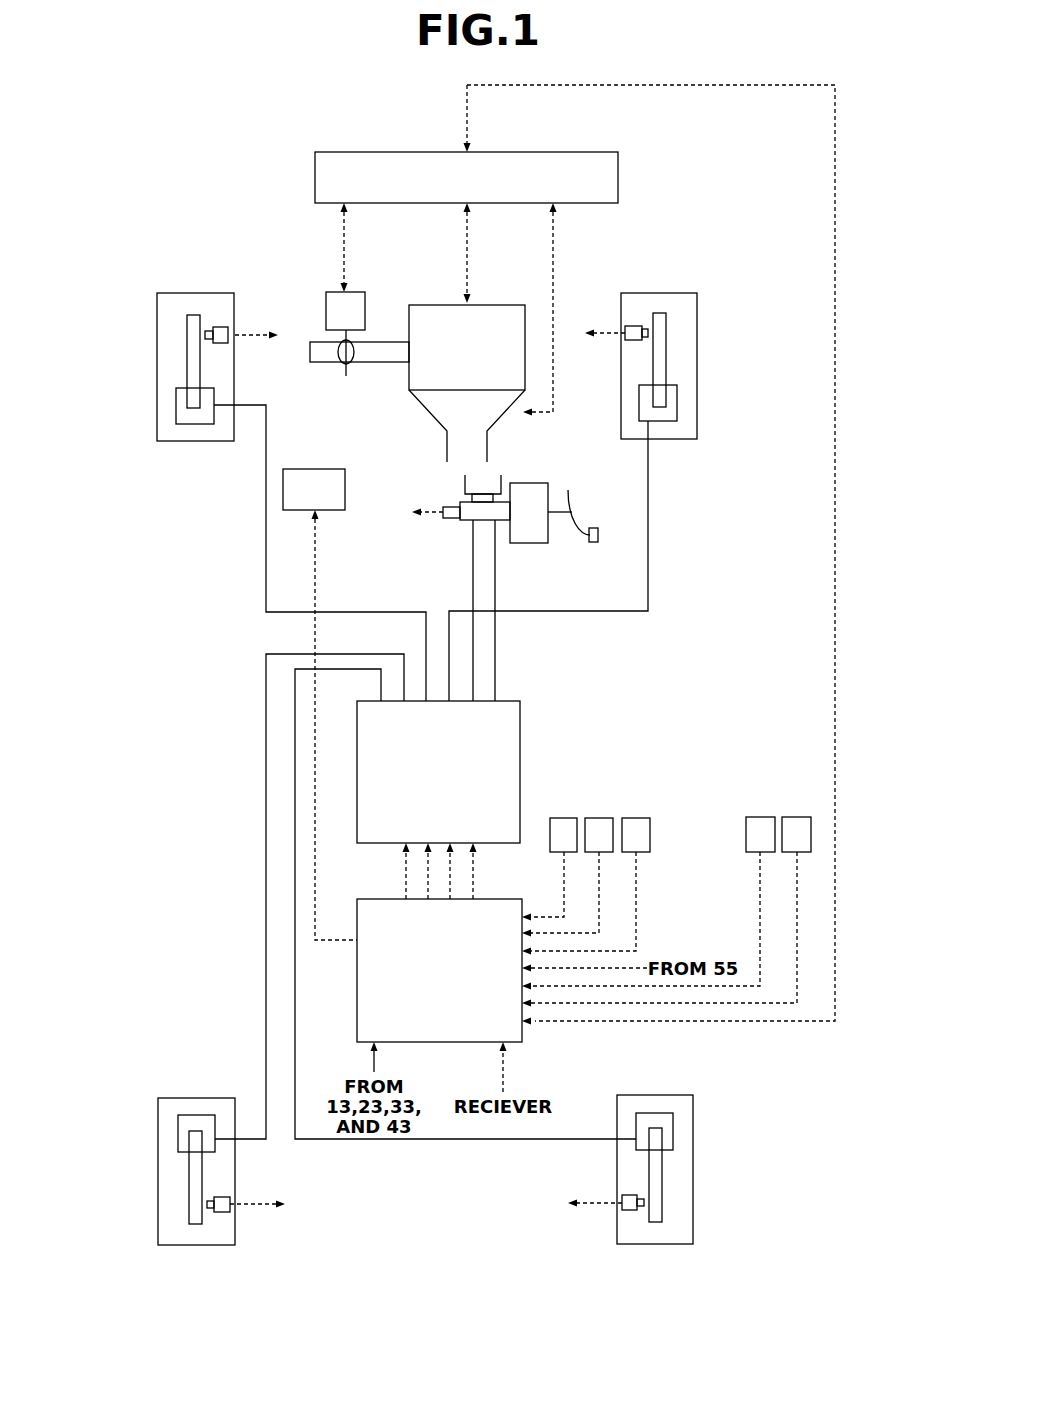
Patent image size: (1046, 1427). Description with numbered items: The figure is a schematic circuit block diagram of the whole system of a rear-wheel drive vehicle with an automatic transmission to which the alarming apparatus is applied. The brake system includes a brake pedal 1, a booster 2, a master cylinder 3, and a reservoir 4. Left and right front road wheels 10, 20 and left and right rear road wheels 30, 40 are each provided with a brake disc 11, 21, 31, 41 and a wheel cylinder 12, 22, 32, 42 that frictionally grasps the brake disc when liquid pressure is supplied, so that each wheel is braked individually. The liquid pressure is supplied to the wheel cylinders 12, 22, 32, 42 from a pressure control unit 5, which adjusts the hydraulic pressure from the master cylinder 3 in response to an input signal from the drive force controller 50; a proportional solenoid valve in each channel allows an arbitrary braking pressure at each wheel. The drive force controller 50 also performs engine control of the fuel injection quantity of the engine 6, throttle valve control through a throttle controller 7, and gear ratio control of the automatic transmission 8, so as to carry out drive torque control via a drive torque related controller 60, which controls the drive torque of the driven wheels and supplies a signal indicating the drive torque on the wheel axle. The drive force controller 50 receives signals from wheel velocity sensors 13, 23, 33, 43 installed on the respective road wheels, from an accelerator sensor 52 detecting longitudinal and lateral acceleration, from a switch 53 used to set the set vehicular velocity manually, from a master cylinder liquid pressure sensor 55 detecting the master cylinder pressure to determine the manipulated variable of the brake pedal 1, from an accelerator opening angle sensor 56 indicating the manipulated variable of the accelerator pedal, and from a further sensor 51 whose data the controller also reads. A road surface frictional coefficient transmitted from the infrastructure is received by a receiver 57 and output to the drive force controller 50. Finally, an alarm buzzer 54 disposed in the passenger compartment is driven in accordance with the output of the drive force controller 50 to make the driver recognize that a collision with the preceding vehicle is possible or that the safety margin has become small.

The brake pedal 1 is at (598, 522).
The booster 2 is at (535, 543).
The master cylinder 3 is at (458, 520).
The reservoir 4 is at (465, 481).
The pressure control unit 5 is at (520, 715).
The engine 6 is at (487, 305).
The throttle controller 7 is at (326, 308).
The automatic transmission 8 is at (512, 421).
The left front road wheel 10 is at (157, 304).
The brake disc 11 is at (187, 360).
The wheel cylinder 12 is at (176, 412).
The wheel velocity sensor 13 is at (222, 327).
The right front road wheel 20 is at (697, 318).
The brake disc 21 is at (667, 357).
The wheel cylinder 22 is at (677, 406).
The wheel velocity sensor 23 is at (632, 326).
The left rear road wheel 30 is at (165, 1098).
The brake disc 31 is at (189, 1196).
The wheel cylinder 32 is at (178, 1124).
The wheel velocity sensor 33 is at (226, 1197).
The right rear road wheel 40 is at (693, 1108).
The brake disc 41 is at (662, 1190).
The wheel cylinder 42 is at (673, 1130).
The wheel velocity sensor 43 is at (628, 1195).
The drive force controller 50 is at (439, 970).
The sensor 51 is at (563, 818).
The accelerator sensor 52 is at (598, 818).
The switch 53 is at (635, 818).
The alarm buzzer 54 is at (318, 469).
The master cylinder liquid pressure sensor 55 is at (443, 520).
The accelerator opening angle sensor 56 is at (760, 817).
The receiver 57 is at (797, 817).
The drive torque related controller 60 is at (618, 178).